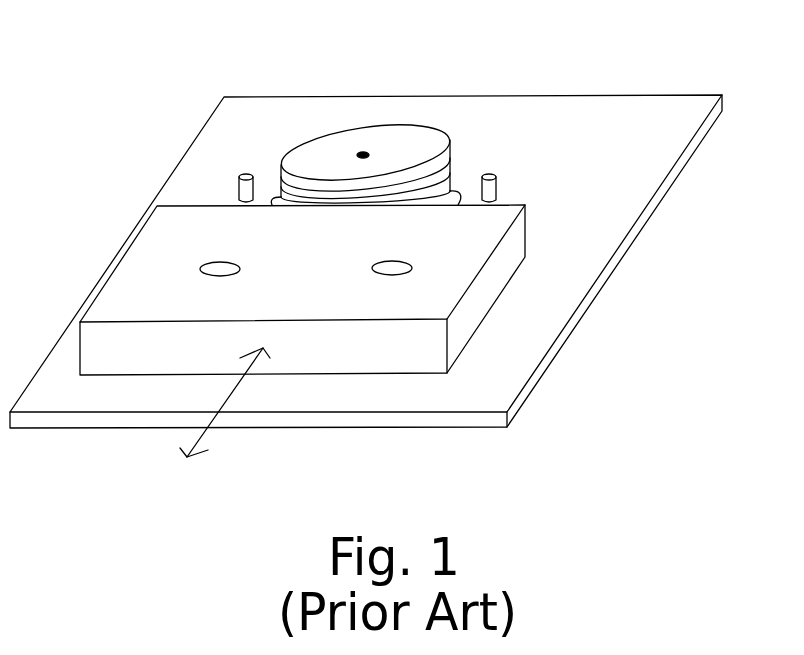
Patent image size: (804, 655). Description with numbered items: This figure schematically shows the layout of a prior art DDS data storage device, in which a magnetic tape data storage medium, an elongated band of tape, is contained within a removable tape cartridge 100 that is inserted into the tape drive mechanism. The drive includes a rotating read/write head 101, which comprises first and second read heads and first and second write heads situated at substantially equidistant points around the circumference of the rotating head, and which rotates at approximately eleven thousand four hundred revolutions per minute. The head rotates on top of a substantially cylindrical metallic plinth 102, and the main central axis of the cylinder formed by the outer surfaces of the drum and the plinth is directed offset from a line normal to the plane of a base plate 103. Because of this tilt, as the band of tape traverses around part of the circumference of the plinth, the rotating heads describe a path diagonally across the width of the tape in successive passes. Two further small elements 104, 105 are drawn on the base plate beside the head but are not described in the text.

The tape cartridge 100 is at (350, 311).
The rotating read/write head 101 is at (345, 138).
The cylindrical metallic plinth 102 is at (425, 175).
The base plate 103 is at (713, 120).
The positioning pin 104 is at (239, 188).
The positioning pin 105 is at (497, 183).